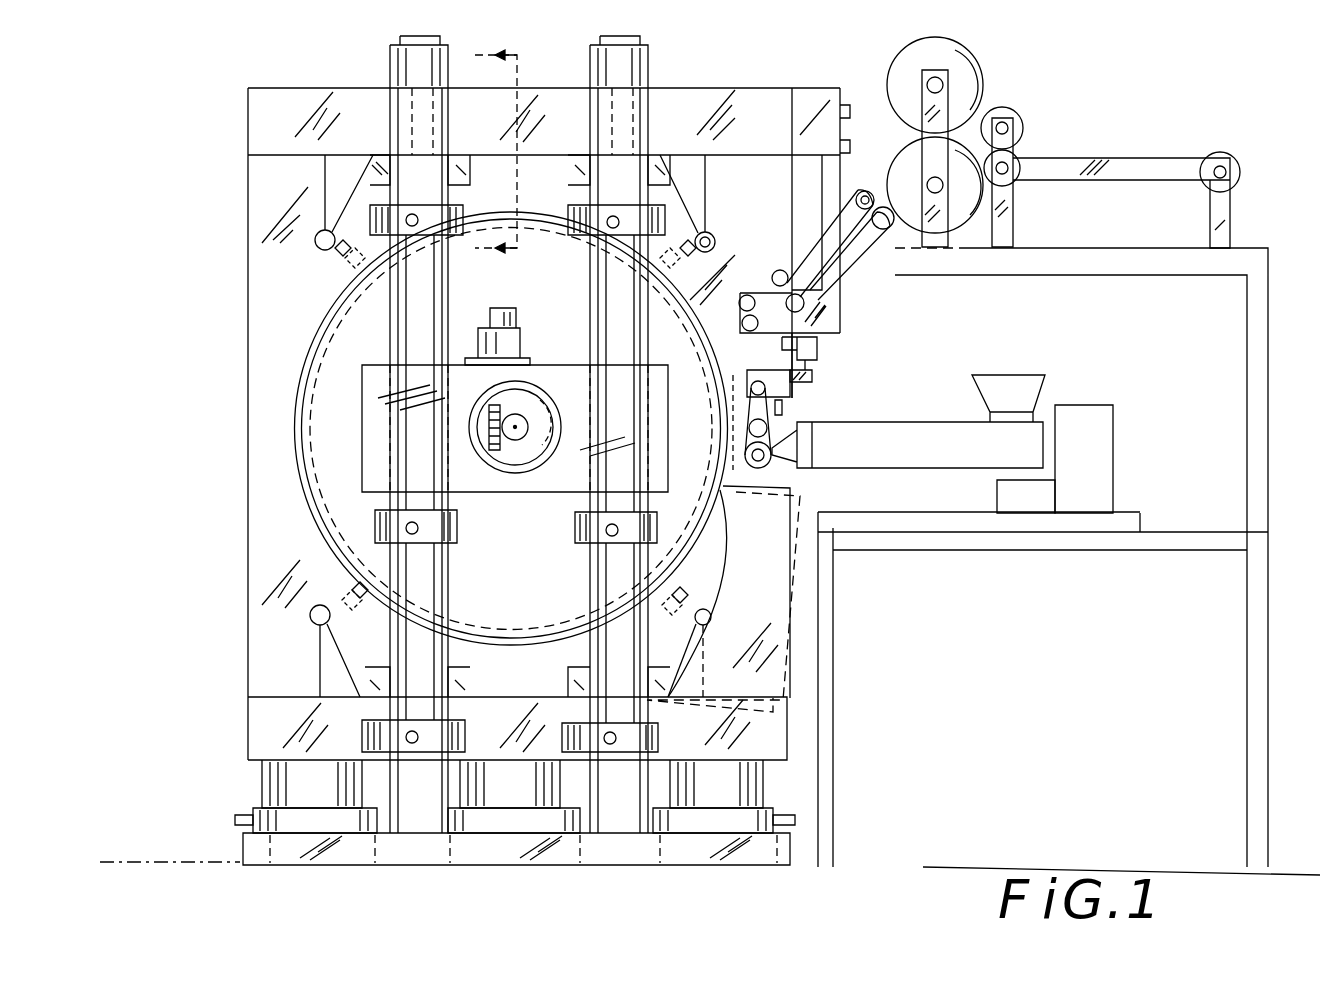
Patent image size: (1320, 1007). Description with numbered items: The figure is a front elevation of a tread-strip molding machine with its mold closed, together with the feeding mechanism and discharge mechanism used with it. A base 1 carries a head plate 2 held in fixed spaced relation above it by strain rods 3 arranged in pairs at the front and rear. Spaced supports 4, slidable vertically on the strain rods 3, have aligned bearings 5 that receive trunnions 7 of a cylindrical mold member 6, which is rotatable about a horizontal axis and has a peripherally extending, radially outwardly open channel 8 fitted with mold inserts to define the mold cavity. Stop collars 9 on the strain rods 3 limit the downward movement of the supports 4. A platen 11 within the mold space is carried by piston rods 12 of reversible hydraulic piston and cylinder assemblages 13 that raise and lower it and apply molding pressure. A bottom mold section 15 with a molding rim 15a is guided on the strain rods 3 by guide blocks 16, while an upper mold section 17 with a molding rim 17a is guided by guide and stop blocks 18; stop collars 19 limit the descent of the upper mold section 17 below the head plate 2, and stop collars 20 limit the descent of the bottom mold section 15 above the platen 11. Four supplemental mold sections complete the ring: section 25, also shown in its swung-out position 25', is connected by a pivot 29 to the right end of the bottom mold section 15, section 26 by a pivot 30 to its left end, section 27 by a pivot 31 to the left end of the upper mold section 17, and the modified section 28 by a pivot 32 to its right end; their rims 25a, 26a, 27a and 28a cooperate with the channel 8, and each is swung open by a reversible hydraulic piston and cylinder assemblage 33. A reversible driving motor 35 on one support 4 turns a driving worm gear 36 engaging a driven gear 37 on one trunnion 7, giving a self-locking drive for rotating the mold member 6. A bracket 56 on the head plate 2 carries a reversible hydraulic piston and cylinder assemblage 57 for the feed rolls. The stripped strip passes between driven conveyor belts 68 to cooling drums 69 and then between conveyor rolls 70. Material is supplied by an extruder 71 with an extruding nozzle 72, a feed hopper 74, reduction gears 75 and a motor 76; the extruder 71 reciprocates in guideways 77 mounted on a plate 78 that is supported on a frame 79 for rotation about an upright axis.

The base 1 is at (282, 852).
The head plate 2 is at (715, 95).
The strain rods 3 is at (395, 335).
The supports 4 is at (670, 432).
The bearings 5 is at (532, 450).
The cylindrical mold member 6 is at (345, 480).
The trunnions 7 is at (540, 408).
The channel 8 is at (320, 355).
The stop collars 9 is at (457, 528).
The platen 11 is at (262, 718).
The piston rods 12 is at (272, 795).
The reversible hydraulic piston and cylinder assemblages 13 is at (265, 812).
The bottom mold section 15 is at (355, 650).
The molding rim 15a is at (517, 671).
The guide blocks 16 is at (560, 690).
The upper mold section 17 is at (520, 130).
The molding rim 17a is at (490, 213).
The guide and stop blocks 18 is at (393, 215).
The stop collars 19 is at (378, 213).
The stop collars 20 is at (362, 740).
The supplemental mold section 25 is at (775, 599).
The mold rim 25a is at (708, 545).
The supplemental mold section (open position) 25' is at (849, 616).
The supplemental mold section 26 is at (262, 618).
The mold rim 26a is at (312, 520).
The supplemental mold section 27 is at (262, 358).
The mold rim 27a is at (302, 392).
The modified mold section 28 is at (772, 222).
The mold rim 28a is at (700, 282).
The pivot 29 is at (712, 614).
The pivot 30 is at (316, 625).
The pivot 31 is at (320, 250).
The pivot 32 is at (715, 242).
The reversible hydraulic piston and cylinder assemblage 33 is at (345, 245).
The driving motor 35 is at (520, 340).
The driving worm gear 36 is at (500, 385).
The driven gear 37 is at (518, 450).
The bracket 56 is at (842, 302).
The reversible hydraulic piston and cylinder assemblage 57 is at (818, 348).
The conveyor belts 68 is at (866, 190).
The cooling drums 69 is at (975, 60).
The conveyor rolls 70 is at (1008, 112).
The extruder 71 is at (860, 420).
The extruding nozzle 72 is at (800, 420).
The feed hopper 74 is at (1030, 375).
The reduction gears 75 is at (1113, 425).
The motor 76 is at (1000, 495).
The guideways 77 is at (1125, 513).
The plate 78 is at (1115, 535).
The frame 79 is at (1040, 550).